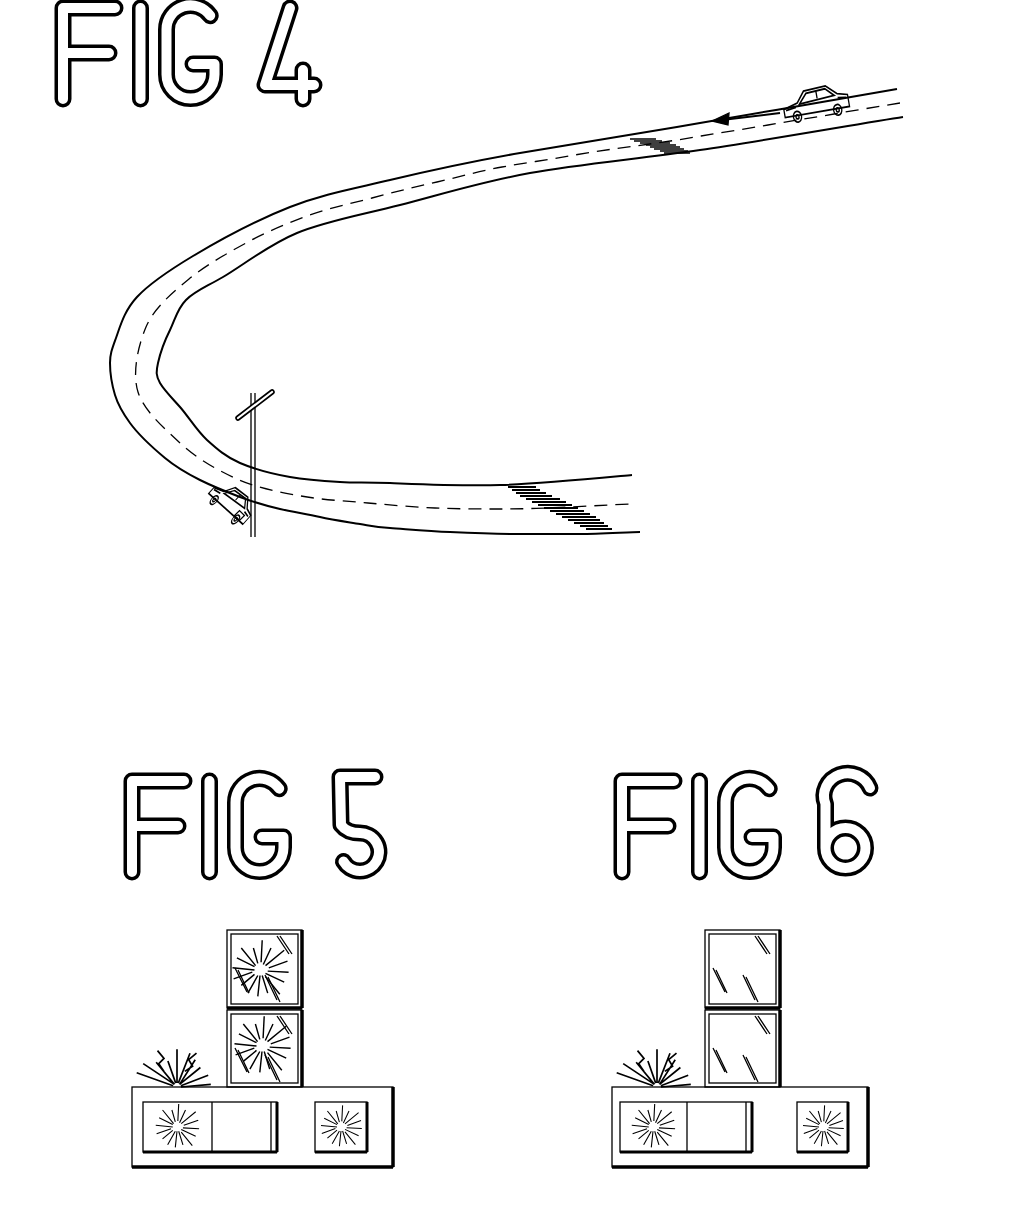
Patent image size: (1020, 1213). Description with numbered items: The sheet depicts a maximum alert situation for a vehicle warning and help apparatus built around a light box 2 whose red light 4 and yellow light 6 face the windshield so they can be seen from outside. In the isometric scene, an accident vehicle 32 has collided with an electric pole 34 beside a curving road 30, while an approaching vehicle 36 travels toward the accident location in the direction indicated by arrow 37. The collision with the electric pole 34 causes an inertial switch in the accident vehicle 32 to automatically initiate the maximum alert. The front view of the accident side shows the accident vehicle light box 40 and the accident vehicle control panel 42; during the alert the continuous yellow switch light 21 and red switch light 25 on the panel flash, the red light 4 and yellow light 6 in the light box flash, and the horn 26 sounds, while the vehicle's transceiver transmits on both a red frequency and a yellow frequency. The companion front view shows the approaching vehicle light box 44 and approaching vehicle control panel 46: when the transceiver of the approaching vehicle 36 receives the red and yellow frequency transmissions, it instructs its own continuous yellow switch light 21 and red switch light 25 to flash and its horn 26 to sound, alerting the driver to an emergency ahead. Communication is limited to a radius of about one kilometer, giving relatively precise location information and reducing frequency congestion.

In FIG. 4, the light box 2 is at (230, 520).
In FIG. 5, the red light 4 is at (260, 970).
In FIG. 5, the yellow light 6 is at (262, 1043).
In FIG. 5, the continuous yellow switch light 21 is at (177, 1127).
In FIG. 6, the continuous yellow switch light 21 is at (653, 1123).
In FIG. 5, the red switch light 25 is at (340, 1125).
In FIG. 6, the red switch light 25 is at (822, 1125).
In FIG. 5, the horn 26 is at (173, 1087).
In FIG. 6, the horn 26 is at (653, 1087).
In FIG. 4, the road 30 is at (567, 147).
In FIG. 4, the accident vehicle 32 is at (213, 490).
In FIG. 4, the electric pole 34 is at (258, 417).
In FIG. 4, the approaching vehicle 36 is at (810, 98).
In FIG. 4, the arrow 37 is at (742, 112).
In FIG. 5, the accident vehicle light box 40 is at (302, 980).
In FIG. 5, the accident vehicle control panel 42 is at (335, 1087).
In FIG. 6, the approaching vehicle light box 44 is at (780, 970).
In FIG. 6, the approaching vehicle control panel 46 is at (812, 1087).